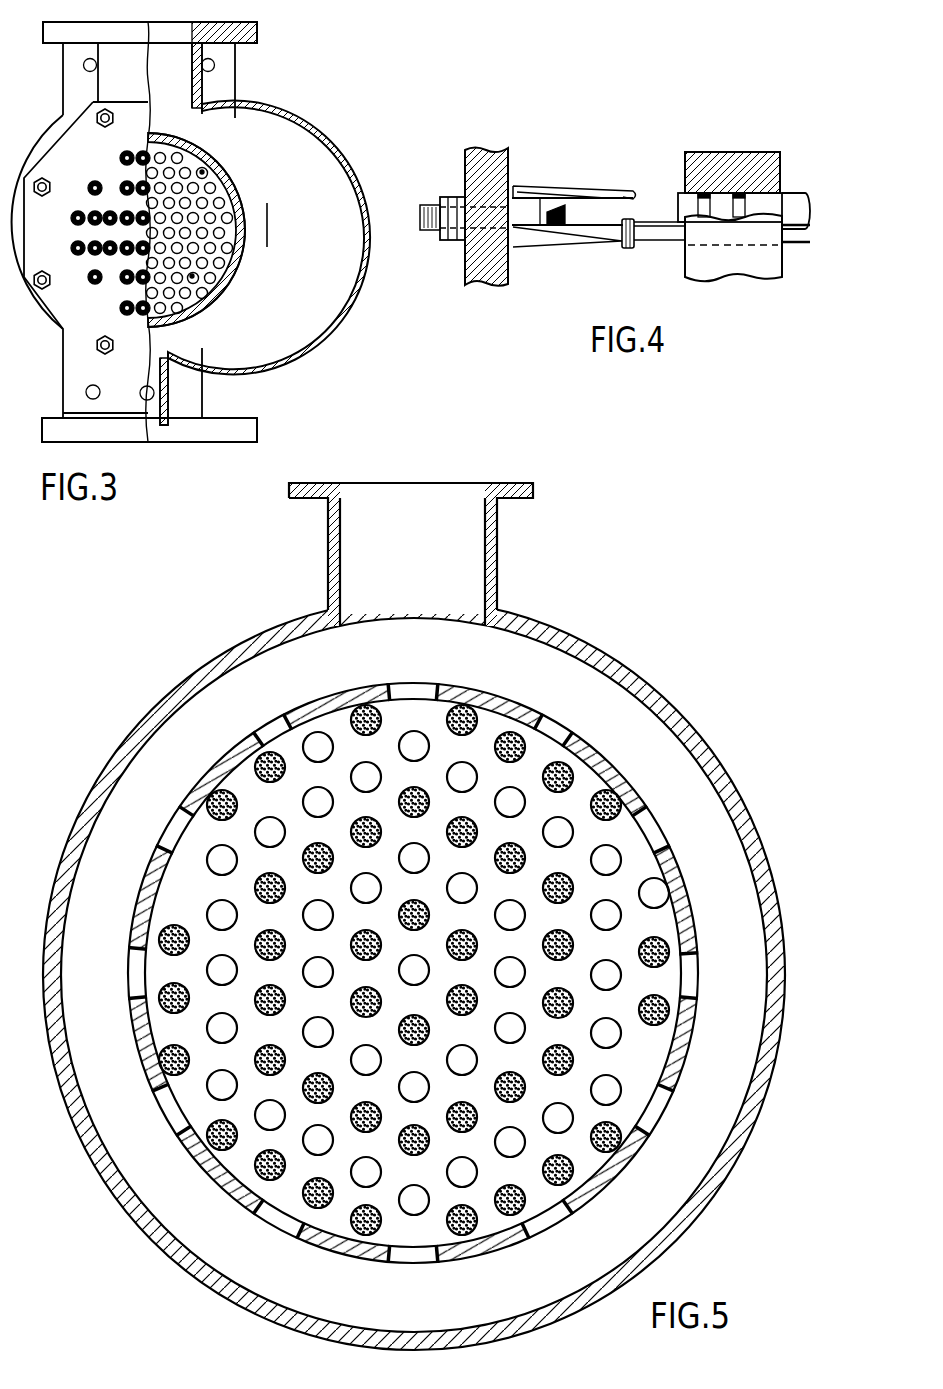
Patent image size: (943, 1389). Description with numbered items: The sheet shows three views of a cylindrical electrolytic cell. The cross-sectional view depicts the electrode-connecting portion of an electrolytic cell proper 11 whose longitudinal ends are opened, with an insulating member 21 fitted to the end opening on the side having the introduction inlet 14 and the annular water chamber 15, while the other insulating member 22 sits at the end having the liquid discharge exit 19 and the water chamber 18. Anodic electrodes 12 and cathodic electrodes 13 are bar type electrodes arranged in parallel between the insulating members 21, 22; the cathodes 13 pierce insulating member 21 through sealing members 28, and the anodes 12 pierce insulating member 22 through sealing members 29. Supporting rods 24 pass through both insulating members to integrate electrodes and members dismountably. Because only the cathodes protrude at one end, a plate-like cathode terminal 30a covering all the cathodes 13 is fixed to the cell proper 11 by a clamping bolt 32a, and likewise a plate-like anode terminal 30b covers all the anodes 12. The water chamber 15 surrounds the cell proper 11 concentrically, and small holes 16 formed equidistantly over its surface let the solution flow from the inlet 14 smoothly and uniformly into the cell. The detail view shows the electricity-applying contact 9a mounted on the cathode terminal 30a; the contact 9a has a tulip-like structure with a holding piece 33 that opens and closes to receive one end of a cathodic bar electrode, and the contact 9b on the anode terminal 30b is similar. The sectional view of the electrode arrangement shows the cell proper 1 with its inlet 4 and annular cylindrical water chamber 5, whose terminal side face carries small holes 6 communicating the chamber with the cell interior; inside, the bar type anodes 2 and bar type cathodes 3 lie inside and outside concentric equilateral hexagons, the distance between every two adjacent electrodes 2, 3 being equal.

In FIG. 5, the electrolytic cell proper 1 is at (526, 708).
In FIG. 5, the anodic bar type electrodes 2 is at (208, 912).
In FIG. 5, the cathodic bar type electrodes 3 is at (160, 992).
In FIG. 5, the inlet 4 is at (457, 494).
In FIG. 5, the annular cylindrical water chamber 5 is at (545, 655).
In FIG. 5, the small holes 6 is at (415, 688).
In FIG. 4, the contact 9a is at (572, 174).
In FIG. 4, the contact 9b is at (540, 186).
In FIG. 3, the electrolytic cell proper 11 is at (247, 248).
In FIG. 3, the anodic electrodes 12 is at (180, 157).
In FIG. 4, the anodic electrodes 12 is at (642, 224).
In FIG. 3, the cathodic electrodes 13 is at (197, 143).
In FIG. 4, the cathodic electrodes 13 is at (738, 252).
In FIG. 3, the introduction inlet 14 is at (165, 30).
In FIG. 3, the annular water chamber 15 is at (267, 227).
In FIG. 3, the small holes 16 is at (245, 208).
In FIG. 3, the annular water chamber 18 is at (70, 247).
In FIG. 4, the annular water chamber 18 is at (450, 241).
In FIG. 4, the liquid discharge exit 19 is at (448, 242).
In FIG. 4, the insulating member 21 is at (767, 200).
In FIG. 4, the insulating member 22 is at (772, 156).
In FIG. 3, the supporting rods 24 is at (204, 173).
In FIG. 4, the sealing members 28 is at (744, 174).
In FIG. 4, the sealing members 29 is at (702, 192).
In FIG. 3, the cathode terminal 30a is at (63, 365).
In FIG. 4, the cathode terminal 30a is at (443, 205).
In FIG. 4, the anode terminal 30b is at (465, 168).
In FIG. 3, the clamping bolt 32a is at (82, 146).
In FIG. 4, the holding piece 33 is at (575, 189).